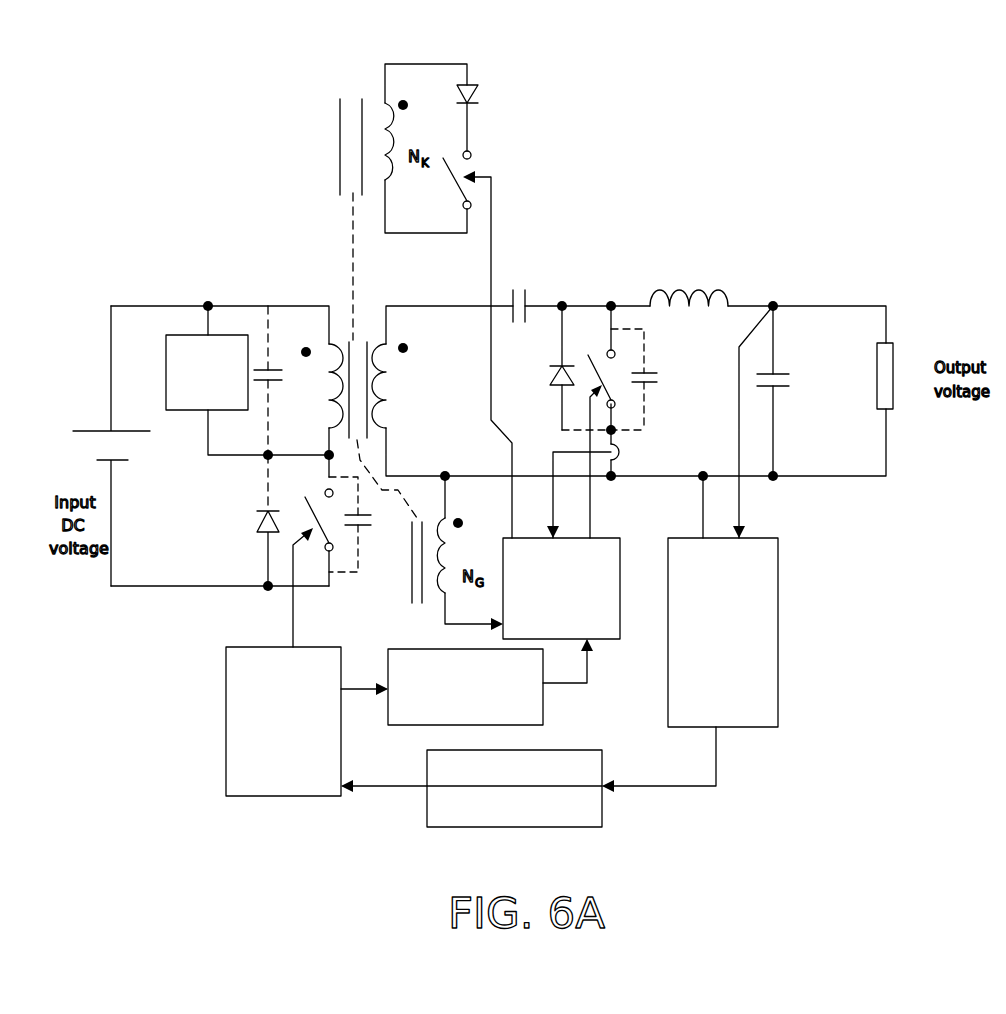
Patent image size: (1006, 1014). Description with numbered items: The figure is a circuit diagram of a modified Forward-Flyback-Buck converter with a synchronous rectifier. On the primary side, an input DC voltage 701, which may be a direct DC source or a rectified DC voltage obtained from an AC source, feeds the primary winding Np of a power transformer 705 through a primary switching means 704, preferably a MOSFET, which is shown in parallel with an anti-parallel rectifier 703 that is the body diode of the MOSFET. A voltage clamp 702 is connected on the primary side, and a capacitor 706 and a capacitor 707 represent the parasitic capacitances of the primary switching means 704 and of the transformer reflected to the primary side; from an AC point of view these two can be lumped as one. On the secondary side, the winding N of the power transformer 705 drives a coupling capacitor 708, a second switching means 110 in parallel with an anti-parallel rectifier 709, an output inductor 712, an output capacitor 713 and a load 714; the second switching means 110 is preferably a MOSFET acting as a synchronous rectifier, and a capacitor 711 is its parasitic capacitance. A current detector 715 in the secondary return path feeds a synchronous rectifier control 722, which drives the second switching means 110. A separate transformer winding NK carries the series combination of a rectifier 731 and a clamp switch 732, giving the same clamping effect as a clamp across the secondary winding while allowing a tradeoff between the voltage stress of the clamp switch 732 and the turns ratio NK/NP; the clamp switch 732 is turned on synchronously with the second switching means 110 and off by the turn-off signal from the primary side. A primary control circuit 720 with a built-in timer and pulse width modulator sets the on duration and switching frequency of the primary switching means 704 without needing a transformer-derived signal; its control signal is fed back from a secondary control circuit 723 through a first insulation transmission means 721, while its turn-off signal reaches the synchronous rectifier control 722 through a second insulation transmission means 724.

The input DC voltage 701 is at (103, 431).
The voltage clamp 702 is at (227, 335).
The anti-parallel rectifier 703 is at (257, 522).
The primary switching means 704 is at (332, 551).
The power transformer 705 is at (368, 337).
The parasitic capacitance of the primary switching means 706 is at (267, 385).
The parasitic capacitance of the transformer 707 is at (370, 522).
The coupling capacitor 708 is at (533, 300).
The anti-parallel rectifier 709 is at (552, 378).
The second switching means 110 is at (630, 433).
The parasitic capacitance of the second switching means 711 is at (650, 383).
The output inductor 712 is at (728, 293).
The output capacitor 713 is at (780, 388).
The load 714 is at (890, 407).
The current detector 715 is at (620, 457).
The primary control circuit 720 is at (297, 795).
The first insulation transmission means 721 is at (500, 828).
The synchronous rectifier control 722 is at (622, 618).
The secondary control circuit 723 is at (750, 728).
The second insulation transmission means 724 is at (542, 710).
The rectifier 731 is at (473, 92).
The clamp switch 732 is at (450, 183).